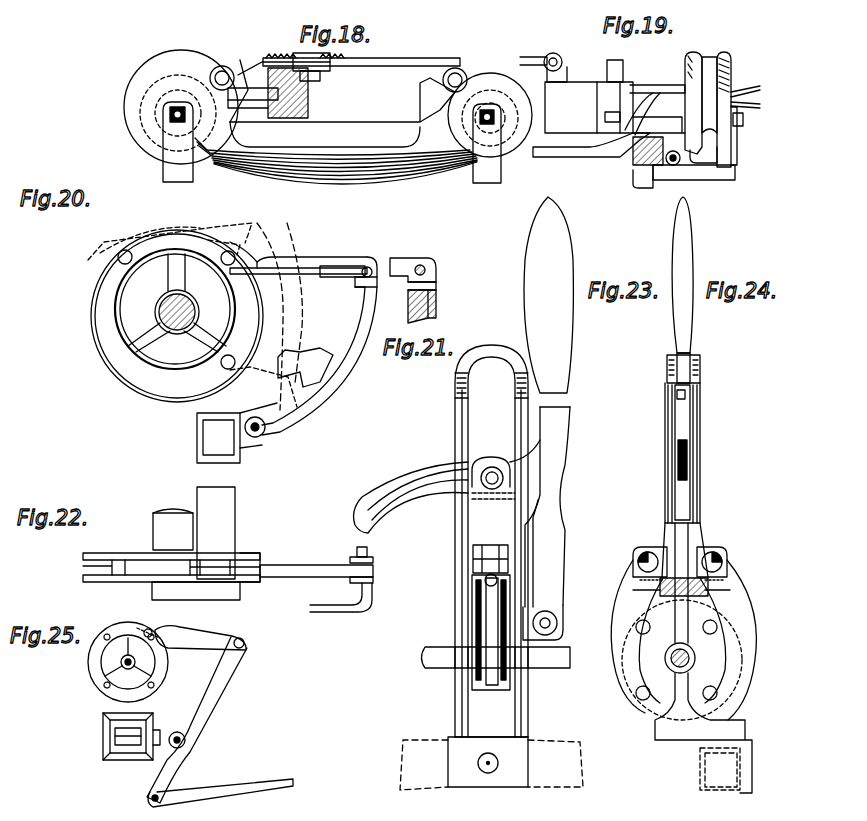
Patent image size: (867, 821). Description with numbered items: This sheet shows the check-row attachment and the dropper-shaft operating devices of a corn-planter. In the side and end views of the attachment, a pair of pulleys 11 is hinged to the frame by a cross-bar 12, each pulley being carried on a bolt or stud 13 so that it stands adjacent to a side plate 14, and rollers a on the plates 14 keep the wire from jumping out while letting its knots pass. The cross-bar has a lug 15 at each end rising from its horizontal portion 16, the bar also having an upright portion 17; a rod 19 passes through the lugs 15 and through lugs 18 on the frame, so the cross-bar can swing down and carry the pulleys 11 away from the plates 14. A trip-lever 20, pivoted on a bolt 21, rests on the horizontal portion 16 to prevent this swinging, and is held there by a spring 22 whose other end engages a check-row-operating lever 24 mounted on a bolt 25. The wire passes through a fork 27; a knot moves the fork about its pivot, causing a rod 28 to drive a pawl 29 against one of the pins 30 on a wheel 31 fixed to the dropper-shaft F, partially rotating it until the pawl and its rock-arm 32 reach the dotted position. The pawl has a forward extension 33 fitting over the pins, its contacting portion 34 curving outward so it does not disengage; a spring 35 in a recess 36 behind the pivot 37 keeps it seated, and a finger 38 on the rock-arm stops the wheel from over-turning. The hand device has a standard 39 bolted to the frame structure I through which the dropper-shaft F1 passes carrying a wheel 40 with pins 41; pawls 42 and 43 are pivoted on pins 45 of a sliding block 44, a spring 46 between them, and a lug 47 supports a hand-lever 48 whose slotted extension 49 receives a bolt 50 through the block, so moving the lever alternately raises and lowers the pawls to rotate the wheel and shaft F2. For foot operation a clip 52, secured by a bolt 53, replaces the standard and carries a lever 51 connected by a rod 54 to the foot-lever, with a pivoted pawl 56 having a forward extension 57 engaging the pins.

In FIG. 18, the pulleys 11 is at (135, 75).
In FIG. 19, the pulleys 11 is at (733, 60).
In FIG. 18, the cross-bar 12 is at (328, 150).
In FIG. 19, the cross-bar 12 is at (722, 181).
In FIG. 18, the bolt or stud 13 is at (185, 118).
In FIG. 19, the bolt or stud 13 is at (745, 120).
In FIG. 19, the side plates 14 is at (685, 70).
In FIG. 19, the lug 15 is at (642, 188).
In FIG. 19, the horizontal portion 16 is at (645, 172).
In FIG. 18, the upright portion 17 is at (332, 142).
In FIG. 19, the upright portion 17 is at (738, 158).
In FIG. 19, the lugs 18 is at (660, 140).
In FIG. 19, the rod 19 is at (672, 166).
In FIG. 19, the trip-lever 20 is at (608, 150).
In FIG. 21, the trip-lever 20 is at (398, 258).
In FIG. 19, the bolt 21 is at (605, 117).
In FIG. 19, the spring 22 is at (650, 88).
In FIG. 18, the check-row-operating lever 24 is at (250, 88).
In FIG. 18, the bolt 25 is at (295, 58).
In FIG. 19, the bolt 25 is at (616, 60).
In FIG. 18, the fork 27 is at (248, 109).
In FIG. 19, the fork 27 is at (760, 85).
In FIG. 18, the rod 28 is at (390, 58).
In FIG. 19, the rod 28 is at (538, 58).
In FIG. 20, the rod 28 is at (343, 265).
In FIG. 22, the rod 28 is at (322, 597).
In FIG. 20, the pawl 29 is at (305, 258).
In FIG. 22, the pawl 29 is at (290, 568).
In FIG. 20, the pins 30 is at (220, 262).
In FIG. 22, the pins 30 is at (83, 567).
In FIG. 20, the wheel 31 is at (177, 316).
In FIG. 22, the wheel 31 is at (118, 553).
In FIG. 20, the rock-arm 32 is at (345, 373).
In FIG. 21, the rock-arm 32 is at (432, 320).
In FIG. 20, the forward extension 33 is at (104, 242).
In FIG. 22, the forward extension 33 is at (205, 567).
In FIG. 20, the pawl engaging portion 34 is at (130, 252).
In FIG. 21, the spring 35 is at (436, 285).
In FIG. 21, the recess 36 is at (437, 303).
In FIG. 21, the pivot 37 is at (422, 265).
In FIG. 20, the finger 38 is at (303, 358).
In FIG. 23, the standard 39 is at (455, 697).
In FIG. 24, the standard 39 is at (705, 368).
In FIG. 23, the wheel 40 is at (472, 622).
In FIG. 24, the wheel 40 is at (695, 655).
In FIG. 25, the pins 41 is at (96, 688).
In FIG. 23, the pins 41 is at (495, 690).
In FIG. 24, the pins 41 is at (720, 628).
In FIG. 24, the pawl 42 is at (733, 575).
In FIG. 23, the pawl 43 is at (488, 600).
In FIG. 24, the pawl 43 is at (633, 590).
In FIG. 23, the sliding block 44 is at (491, 541).
In FIG. 24, the sliding block 44 is at (700, 525).
In FIG. 24, the pins 45 is at (643, 547).
In FIG. 24, the spring 46 is at (718, 600).
In FIG. 23, the lug 47 is at (560, 628).
In FIG. 23, the hand-lever 48 is at (575, 440).
In FIG. 24, the hand-lever 48 is at (695, 323).
In FIG. 23, the slotted extension 49 is at (372, 482).
In FIG. 24, the slotted extension 49 is at (690, 480).
In FIG. 23, the bolt 50 is at (493, 466).
In FIG. 25, the lever 51 is at (230, 698).
In FIG. 25, the clip 52 is at (103, 720).
In FIG. 25, the bolt 53 is at (110, 738).
In FIG. 25, the rod 54 is at (215, 786).
In FIG. 25, the pivoted pawl 56 is at (208, 637).
In FIG. 25, the forward extension 57 is at (145, 628).
In FIG. 18, the rollers a is at (228, 66).
In FIG. 19, the rollers a is at (706, 56).
In FIG. 25, the frame structure I is at (160, 720).
In FIG. 23, the frame structure I is at (565, 755).
In FIG. 24, the frame structure I is at (735, 760).
In FIG. 20, the dropper-shaft F is at (160, 305).
In FIG. 23, the dropper-shaft F1 is at (556, 657).
In FIG. 24, the dropper-shaft F2 is at (690, 662).